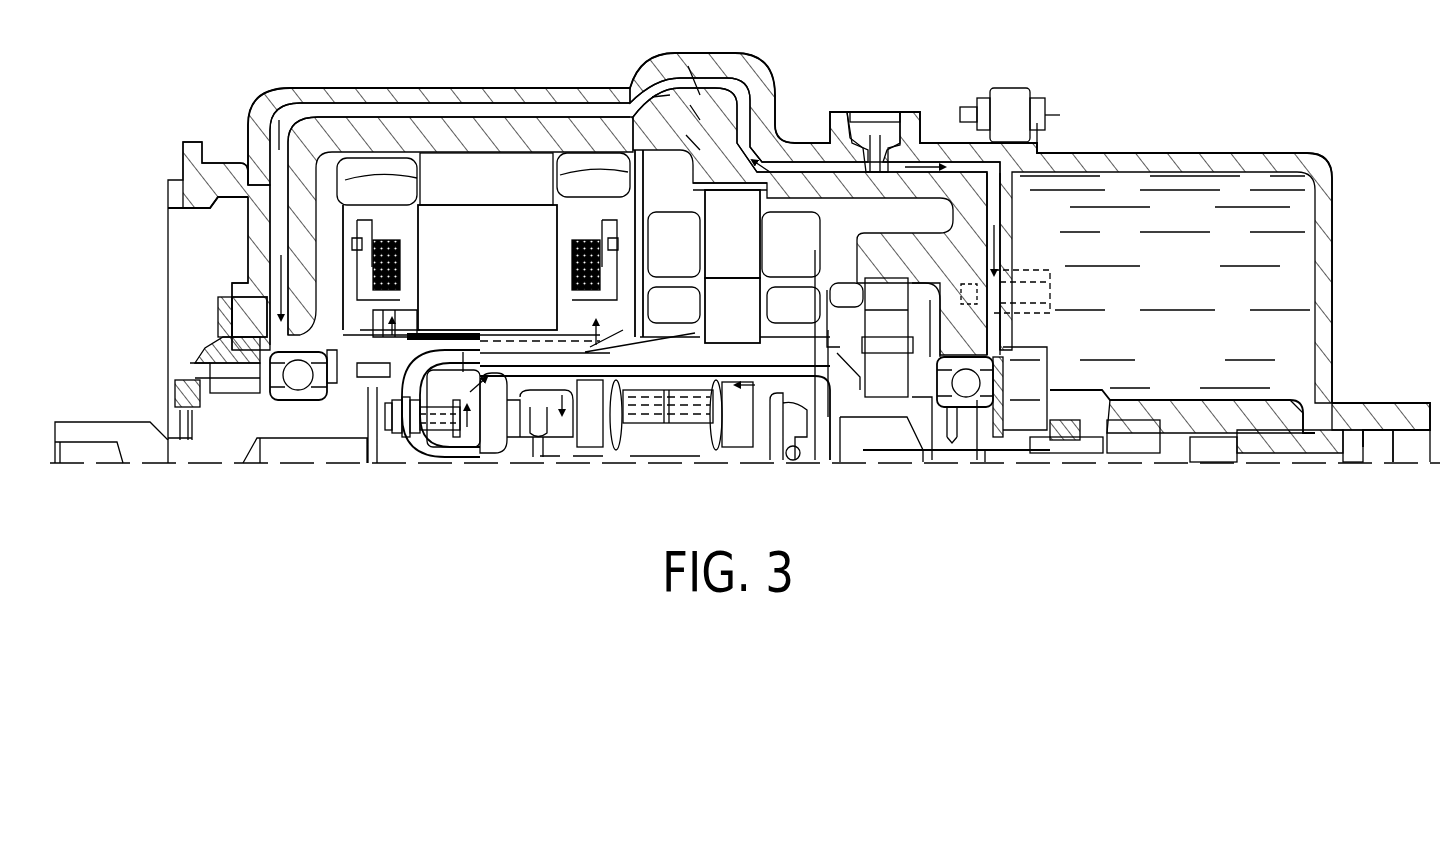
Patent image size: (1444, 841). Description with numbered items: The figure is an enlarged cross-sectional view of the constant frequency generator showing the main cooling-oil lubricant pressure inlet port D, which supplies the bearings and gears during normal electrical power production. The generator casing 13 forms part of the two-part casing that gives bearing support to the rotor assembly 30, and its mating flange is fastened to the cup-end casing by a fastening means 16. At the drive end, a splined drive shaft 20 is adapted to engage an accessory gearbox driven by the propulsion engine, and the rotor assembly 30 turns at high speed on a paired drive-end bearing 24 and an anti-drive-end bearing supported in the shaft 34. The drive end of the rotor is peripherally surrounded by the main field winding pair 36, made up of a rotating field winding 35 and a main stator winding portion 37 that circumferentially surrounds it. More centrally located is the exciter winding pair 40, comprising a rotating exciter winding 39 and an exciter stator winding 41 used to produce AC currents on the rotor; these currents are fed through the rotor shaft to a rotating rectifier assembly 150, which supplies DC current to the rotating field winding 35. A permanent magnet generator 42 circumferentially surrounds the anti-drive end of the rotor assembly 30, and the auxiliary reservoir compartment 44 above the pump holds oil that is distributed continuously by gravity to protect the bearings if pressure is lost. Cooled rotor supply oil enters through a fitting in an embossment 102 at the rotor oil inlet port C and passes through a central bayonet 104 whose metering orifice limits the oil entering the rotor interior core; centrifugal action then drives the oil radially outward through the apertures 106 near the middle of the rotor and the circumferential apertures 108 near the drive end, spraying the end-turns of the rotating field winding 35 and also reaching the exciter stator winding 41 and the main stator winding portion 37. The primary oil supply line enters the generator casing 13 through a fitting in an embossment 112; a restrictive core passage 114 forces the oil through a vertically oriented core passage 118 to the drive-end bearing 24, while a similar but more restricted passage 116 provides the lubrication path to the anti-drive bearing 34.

The generator casing 13 is at (777, 108).
The fastening means 16 is at (1047, 115).
The splined drive shaft 20 is at (110, 420).
The drive-end bearing 24 is at (195, 370).
The rotor assembly 30 is at (932, 356).
The shaft 34 is at (987, 450).
The rotating field winding 35 is at (567, 255).
The main field winding pair 36 is at (507, 251).
The main stator winding portion 37 is at (427, 181).
The rotating exciter winding 39 is at (787, 303).
The exciter winding pair 40 is at (745, 262).
The exciter stator winding 41 is at (787, 222).
The permanent magnet generator 42 is at (900, 339).
The auxiliary reservoir compartment 44 is at (1190, 281).
The embossment 102 is at (1435, 402).
The central bayonet 104 is at (912, 462).
The apertures 106 is at (607, 348).
The circumferential apertures 108 is at (478, 345).
The embossment 112 is at (908, 112).
The core passage 114 is at (713, 80).
The passage 116 is at (1000, 217).
The vertically oriented core passage 118 is at (278, 160).
The rotating rectifier assembly 150 is at (680, 462).
The main cooling-oil lubricant pressure inlet port D is at (872, 110).
The rotor oil inlet port C is at (1432, 465).